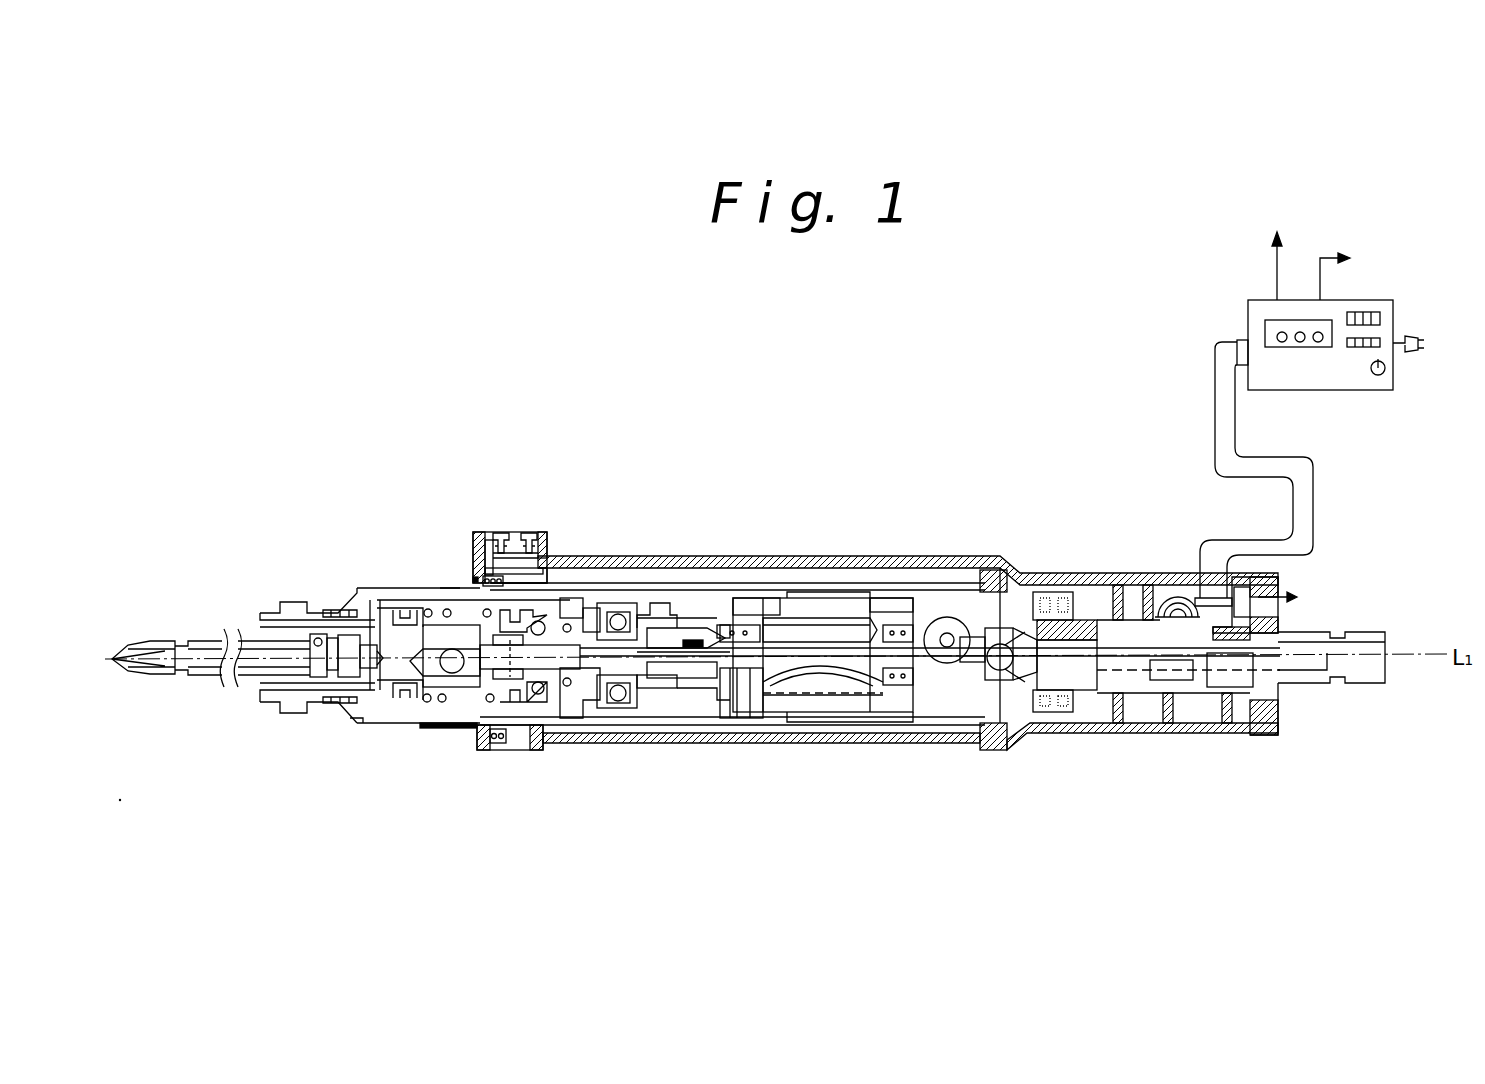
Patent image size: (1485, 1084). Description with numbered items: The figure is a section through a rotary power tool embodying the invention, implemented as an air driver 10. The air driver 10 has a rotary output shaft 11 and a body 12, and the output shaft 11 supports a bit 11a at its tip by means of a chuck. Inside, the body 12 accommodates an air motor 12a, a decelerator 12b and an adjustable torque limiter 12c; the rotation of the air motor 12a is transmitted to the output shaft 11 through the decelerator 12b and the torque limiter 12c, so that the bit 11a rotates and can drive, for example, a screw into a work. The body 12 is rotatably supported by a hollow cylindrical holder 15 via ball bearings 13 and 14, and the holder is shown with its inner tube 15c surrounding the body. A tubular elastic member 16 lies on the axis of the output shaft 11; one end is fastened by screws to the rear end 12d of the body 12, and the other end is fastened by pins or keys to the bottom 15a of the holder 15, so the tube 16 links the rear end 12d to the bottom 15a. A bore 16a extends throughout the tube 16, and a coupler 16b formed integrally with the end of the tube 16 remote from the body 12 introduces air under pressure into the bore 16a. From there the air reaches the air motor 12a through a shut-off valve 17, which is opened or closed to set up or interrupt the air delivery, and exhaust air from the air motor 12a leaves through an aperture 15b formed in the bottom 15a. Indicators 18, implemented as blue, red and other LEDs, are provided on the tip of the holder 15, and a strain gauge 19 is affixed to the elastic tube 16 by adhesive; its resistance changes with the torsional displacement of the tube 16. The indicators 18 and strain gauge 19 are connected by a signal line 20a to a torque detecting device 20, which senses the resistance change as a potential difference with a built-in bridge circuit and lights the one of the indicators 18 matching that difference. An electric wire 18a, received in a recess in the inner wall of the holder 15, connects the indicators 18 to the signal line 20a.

The air driver 10 is at (865, 472).
The rotary output shaft 11 is at (362, 583).
The bit 11a is at (200, 637).
The body 12 is at (800, 700).
The air motor 12a is at (838, 685).
The decelerator 12b is at (660, 680).
The adjustable torque limiter 12c is at (535, 702).
The rear end of the body 12d is at (1050, 597).
The ball bearing 13 is at (476, 579).
The ball bearing 14 is at (990, 578).
The hollow cylindrical holder 15 is at (745, 556).
The bottom of the holder 15a is at (1260, 705).
The aperture 15b is at (1280, 592).
The inner tube of casing 15c is at (822, 582).
The tubular elastic member 16 is at (1118, 607).
The bore 16a is at (1147, 620).
The coupler 16b is at (1363, 634).
The shut-off valve 17 is at (1000, 665).
The indicators 18 is at (530, 533).
The electric wire 18a is at (628, 560).
The strain gauge 19 is at (1130, 668).
The torque detecting device 20 is at (1248, 318).
The signal line 20a is at (1213, 530).